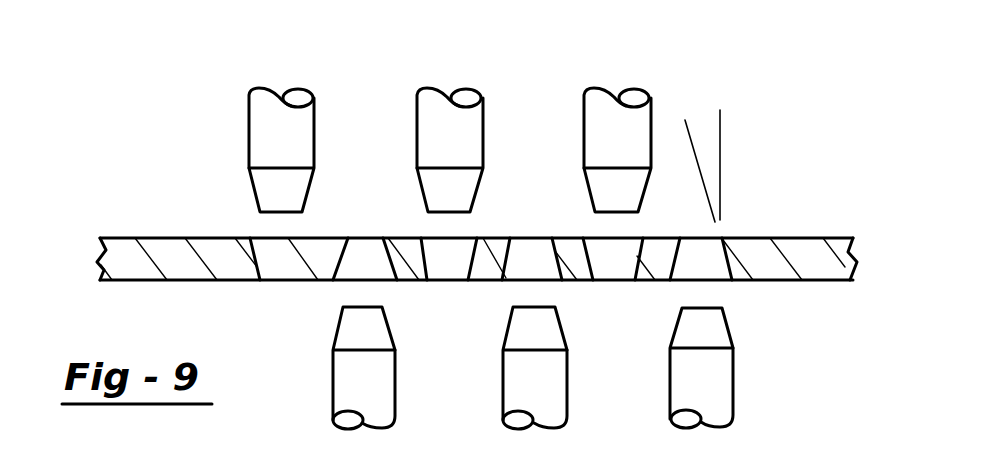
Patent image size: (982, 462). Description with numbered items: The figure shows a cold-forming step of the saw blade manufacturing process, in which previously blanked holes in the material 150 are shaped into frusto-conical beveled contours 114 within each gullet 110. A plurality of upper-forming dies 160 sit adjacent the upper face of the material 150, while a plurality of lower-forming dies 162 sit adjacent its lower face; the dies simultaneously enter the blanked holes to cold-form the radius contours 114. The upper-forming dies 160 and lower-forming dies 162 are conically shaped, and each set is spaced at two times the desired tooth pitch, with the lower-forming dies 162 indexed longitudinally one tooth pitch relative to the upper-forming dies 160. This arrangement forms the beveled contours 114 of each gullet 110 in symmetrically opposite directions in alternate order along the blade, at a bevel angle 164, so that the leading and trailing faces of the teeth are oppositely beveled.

The gullet 110 is at (360, 248).
The frusto-conical shaped beveled contour 114 is at (285, 237).
The material 150 is at (143, 237).
The upper-forming dies 160 is at (430, 147).
The lower-forming dies 162 is at (508, 385).
The bevel angle 164 is at (690, 128).